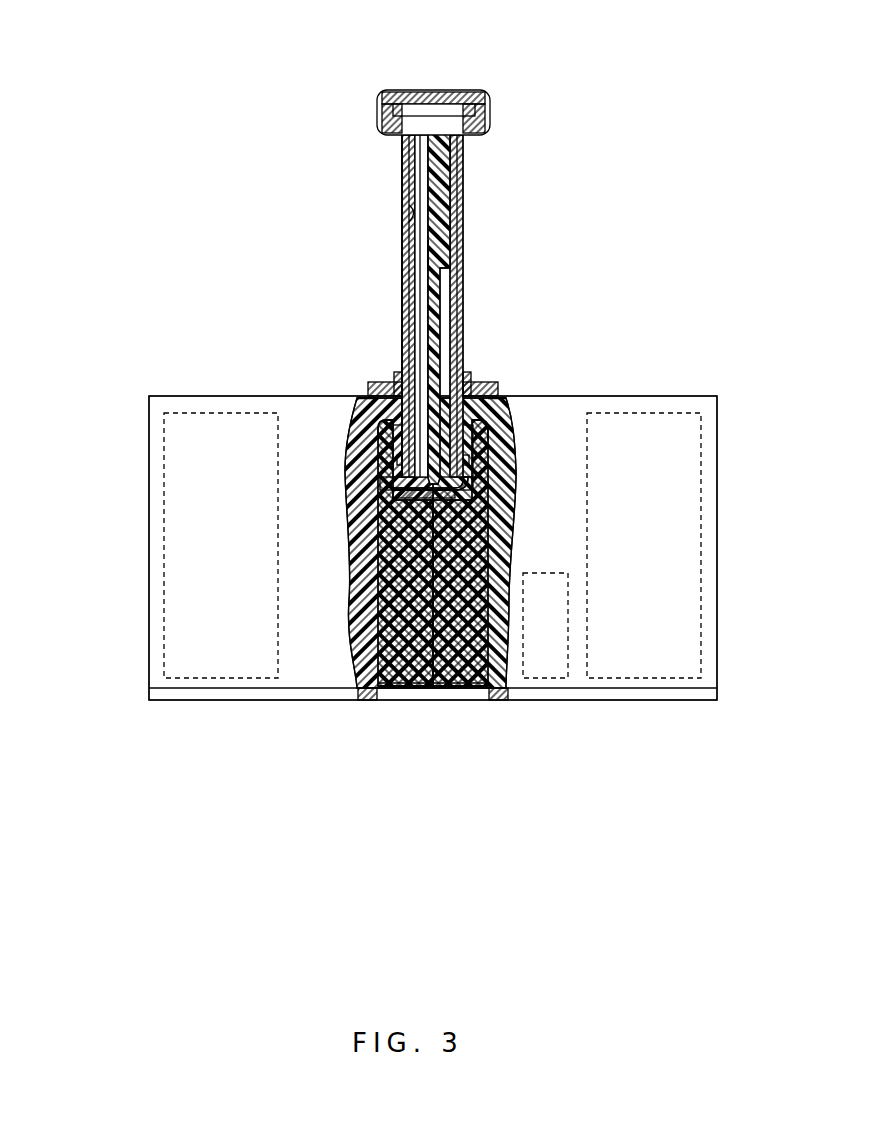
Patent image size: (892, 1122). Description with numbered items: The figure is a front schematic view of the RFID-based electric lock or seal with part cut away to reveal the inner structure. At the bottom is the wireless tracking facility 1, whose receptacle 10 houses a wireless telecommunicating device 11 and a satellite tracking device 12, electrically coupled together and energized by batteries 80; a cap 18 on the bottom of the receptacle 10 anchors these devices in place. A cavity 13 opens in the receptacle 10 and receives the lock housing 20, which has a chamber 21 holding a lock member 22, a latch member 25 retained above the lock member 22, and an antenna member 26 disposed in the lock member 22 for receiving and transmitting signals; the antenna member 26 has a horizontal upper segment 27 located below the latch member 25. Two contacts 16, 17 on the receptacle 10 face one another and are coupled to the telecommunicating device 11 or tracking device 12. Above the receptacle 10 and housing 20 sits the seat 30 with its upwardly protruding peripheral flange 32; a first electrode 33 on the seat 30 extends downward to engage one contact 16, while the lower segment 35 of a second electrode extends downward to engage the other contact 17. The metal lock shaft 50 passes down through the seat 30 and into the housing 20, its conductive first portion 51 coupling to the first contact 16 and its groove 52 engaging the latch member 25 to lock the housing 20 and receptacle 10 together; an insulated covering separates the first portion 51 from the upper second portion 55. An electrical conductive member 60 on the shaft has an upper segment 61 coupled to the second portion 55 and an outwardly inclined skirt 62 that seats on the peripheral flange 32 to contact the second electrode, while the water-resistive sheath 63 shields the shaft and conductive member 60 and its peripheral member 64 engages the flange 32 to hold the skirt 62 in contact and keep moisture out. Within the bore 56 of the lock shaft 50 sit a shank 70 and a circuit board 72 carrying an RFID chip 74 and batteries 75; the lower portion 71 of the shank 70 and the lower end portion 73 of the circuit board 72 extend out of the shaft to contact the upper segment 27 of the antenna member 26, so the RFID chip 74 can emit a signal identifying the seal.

The wireless tracking facility 1 is at (730, 372).
The receptacle 10 is at (677, 397).
The wireless telecommunicating device 11 is at (650, 663).
The satellite tracking device 12 is at (220, 650).
The cavity 13 is at (467, 673).
The contact 16 is at (493, 383).
The contact 17 is at (372, 384).
The cap 18 is at (160, 692).
The housing 20 is at (377, 620).
The chamber 21 is at (393, 592).
The lock member 22 is at (413, 680).
The latch member 25 is at (353, 423).
The antenna member 26 is at (460, 670).
The upper segment 27 is at (395, 492).
The seat 30 is at (500, 390).
The peripheral flange 32 is at (460, 358).
The first electrode 33 is at (500, 412).
The lower segment 35 is at (368, 397).
The lock shaft 50 is at (415, 186).
The first portion 51 is at (480, 432).
The groove 52 is at (487, 490).
The second portion 55 is at (388, 92).
The bore 56 is at (408, 222).
The electrical conductive member 60 is at (403, 290).
The upper segment 61 is at (403, 144).
The skirt 62 is at (400, 380).
The sheath 63 is at (463, 206).
The peripheral member 64 is at (466, 385).
The shank 70 is at (442, 166).
The lower portion 71 is at (480, 455).
The circuit board 72 is at (428, 254).
The lower end portion 73 is at (372, 497).
The RFID chip 74 is at (385, 120).
The battery 75 is at (418, 162).
The battery 80 is at (547, 665).